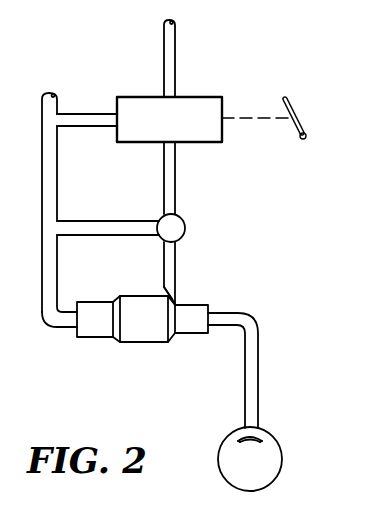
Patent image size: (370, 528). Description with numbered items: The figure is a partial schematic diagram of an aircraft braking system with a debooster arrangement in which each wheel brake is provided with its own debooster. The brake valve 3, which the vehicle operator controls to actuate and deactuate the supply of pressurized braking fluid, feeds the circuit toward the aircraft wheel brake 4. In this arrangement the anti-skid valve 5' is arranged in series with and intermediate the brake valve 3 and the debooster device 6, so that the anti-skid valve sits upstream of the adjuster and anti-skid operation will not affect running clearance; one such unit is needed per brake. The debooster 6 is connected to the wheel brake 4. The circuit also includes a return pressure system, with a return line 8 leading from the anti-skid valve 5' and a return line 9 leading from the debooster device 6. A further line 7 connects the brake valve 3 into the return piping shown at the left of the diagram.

The brake valve 3 is at (210, 103).
The aircraft wheel brake 4 is at (277, 457).
The anti-skid valve 5' is at (194, 217).
The debooster device 6 is at (174, 303).
The upper connecting pipe 7 is at (82, 125).
The return line 8 is at (107, 228).
The return line 9 is at (49, 301).